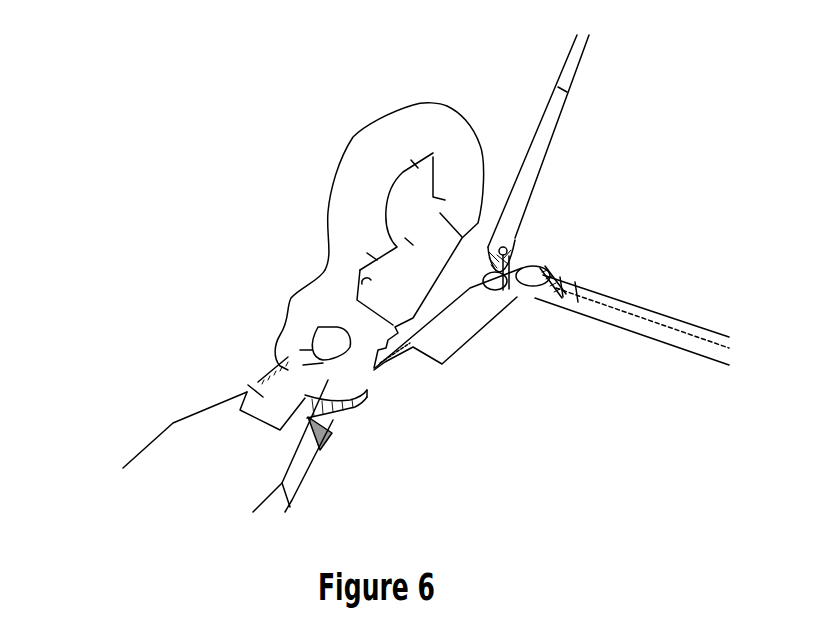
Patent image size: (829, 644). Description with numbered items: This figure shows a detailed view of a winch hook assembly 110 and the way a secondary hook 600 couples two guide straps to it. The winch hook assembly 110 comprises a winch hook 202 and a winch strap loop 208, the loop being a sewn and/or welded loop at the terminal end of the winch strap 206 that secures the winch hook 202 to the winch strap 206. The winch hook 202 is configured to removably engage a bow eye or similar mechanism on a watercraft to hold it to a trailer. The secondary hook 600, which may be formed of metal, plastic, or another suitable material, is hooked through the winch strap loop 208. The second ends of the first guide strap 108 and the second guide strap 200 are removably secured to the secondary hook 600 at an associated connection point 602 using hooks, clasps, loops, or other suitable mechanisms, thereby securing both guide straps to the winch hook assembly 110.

The winch hook assembly 110 is at (263, 259).
The winch hook 202 is at (360, 138).
The second guide strap 200 is at (563, 103).
The winch strap 206 is at (155, 440).
The winch strap loop 208 is at (253, 390).
The secondary hook 600 is at (458, 365).
The connection point 602 is at (528, 303).
The first guide strap 108 is at (657, 338).